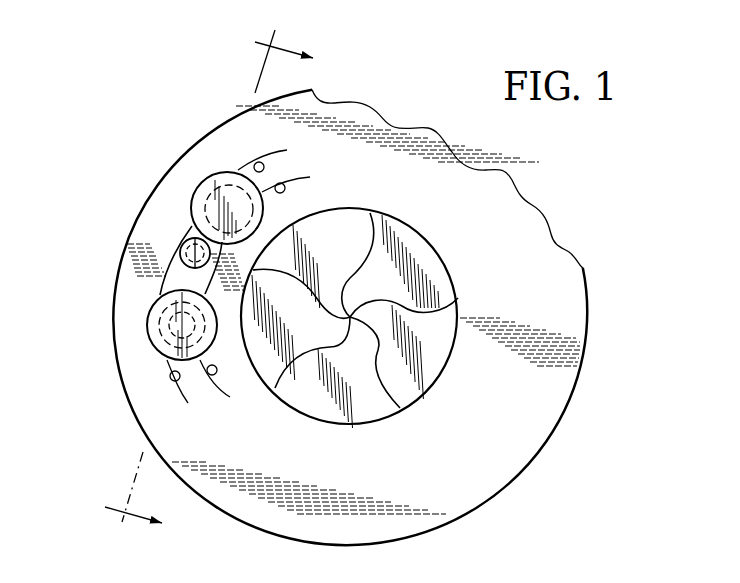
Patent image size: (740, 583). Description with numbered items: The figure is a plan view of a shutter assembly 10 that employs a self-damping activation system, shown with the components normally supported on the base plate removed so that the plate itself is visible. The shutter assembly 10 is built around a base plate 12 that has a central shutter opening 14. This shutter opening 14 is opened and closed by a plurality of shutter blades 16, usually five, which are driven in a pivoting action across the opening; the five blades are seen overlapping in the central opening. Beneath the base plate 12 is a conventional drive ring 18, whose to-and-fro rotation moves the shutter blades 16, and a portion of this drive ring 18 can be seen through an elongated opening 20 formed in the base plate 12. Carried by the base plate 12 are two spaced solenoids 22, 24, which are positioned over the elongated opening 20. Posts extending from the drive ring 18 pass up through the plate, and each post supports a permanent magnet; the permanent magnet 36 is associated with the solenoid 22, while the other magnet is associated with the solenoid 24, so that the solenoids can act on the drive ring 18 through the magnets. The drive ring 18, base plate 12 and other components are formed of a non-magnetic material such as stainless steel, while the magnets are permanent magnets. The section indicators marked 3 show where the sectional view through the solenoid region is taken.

The shutter assembly 10 is at (185, 112).
The base plate 12 is at (574, 294).
The shutter opening 14 is at (428, 238).
The shutter blades 16 is at (445, 344).
The drive ring 18 is at (165, 283).
The elongated opening 20 is at (188, 231).
The solenoid 22 is at (193, 188).
The solenoid 24 is at (147, 323).
The permanent magnet 36 is at (178, 248).
The section line 3- 3 is at (206, 280).